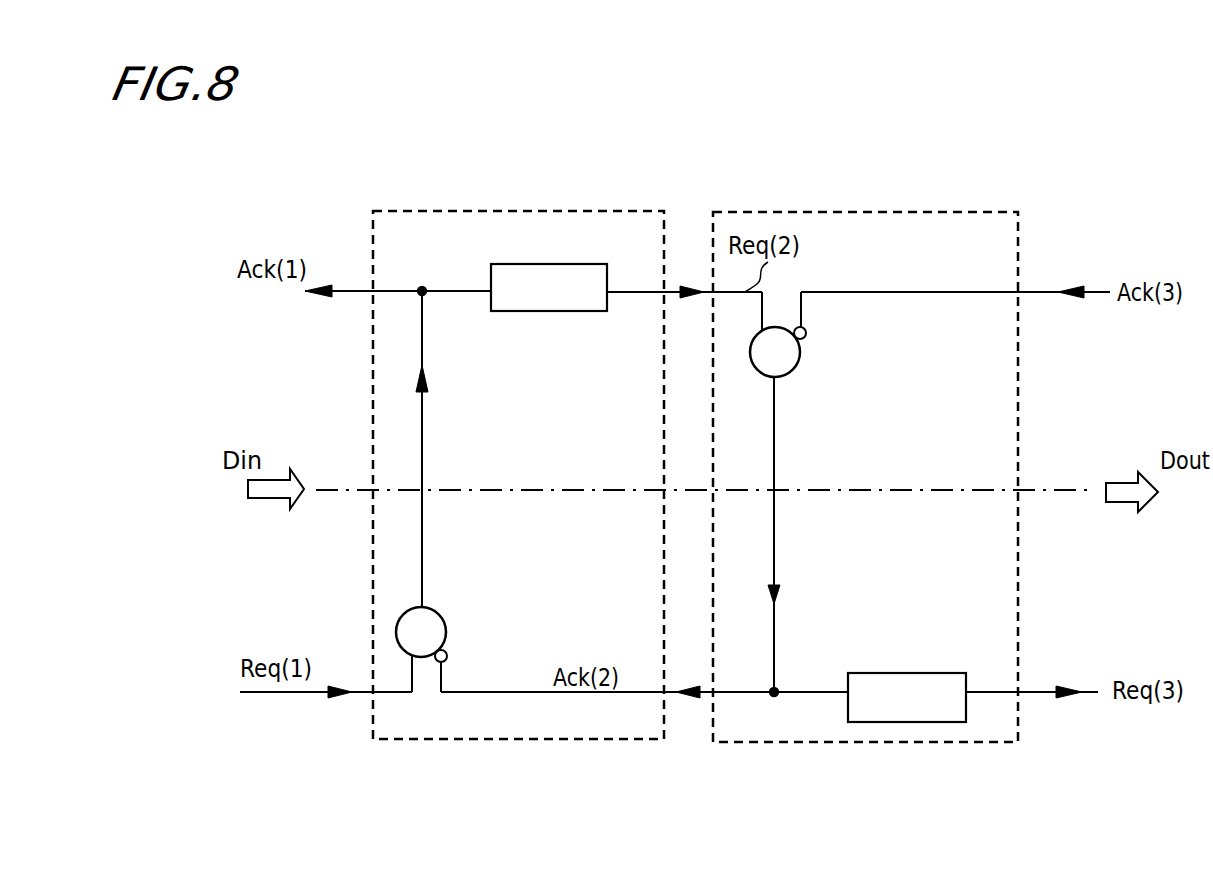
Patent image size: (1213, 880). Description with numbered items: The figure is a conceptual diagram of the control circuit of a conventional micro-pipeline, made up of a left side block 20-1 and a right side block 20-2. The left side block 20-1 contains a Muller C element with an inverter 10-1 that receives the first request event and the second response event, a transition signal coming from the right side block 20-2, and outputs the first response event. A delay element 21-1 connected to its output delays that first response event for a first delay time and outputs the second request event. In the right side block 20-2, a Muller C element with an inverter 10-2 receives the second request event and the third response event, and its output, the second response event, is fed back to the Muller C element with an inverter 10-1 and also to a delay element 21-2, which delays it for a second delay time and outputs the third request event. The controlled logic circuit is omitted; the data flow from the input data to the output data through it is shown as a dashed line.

The left side block 20-1 is at (531, 211).
The right side block 20-2 is at (896, 212).
The Muller C element with an inverter 10-1 is at (445, 617).
The Muller C element with an inverter 10-2 is at (798, 364).
The delay element 21-1 is at (523, 311).
The delay element 21-2 is at (933, 673).